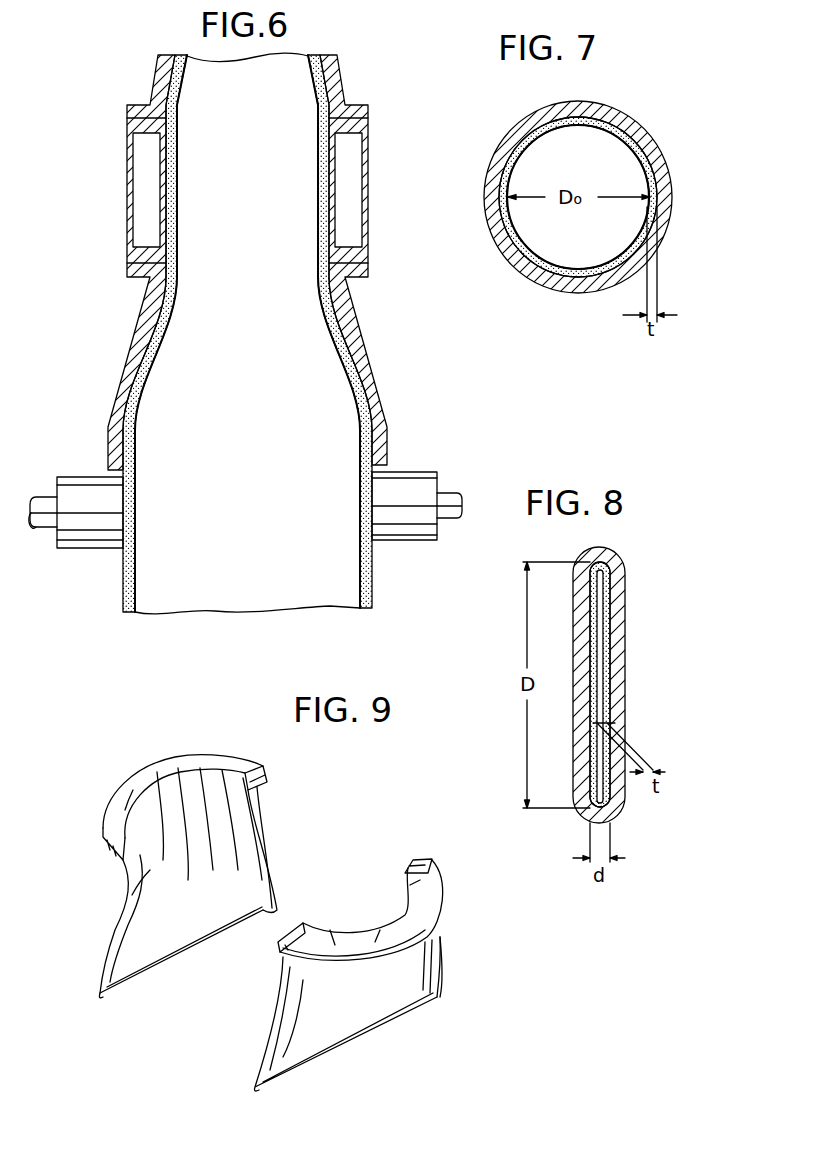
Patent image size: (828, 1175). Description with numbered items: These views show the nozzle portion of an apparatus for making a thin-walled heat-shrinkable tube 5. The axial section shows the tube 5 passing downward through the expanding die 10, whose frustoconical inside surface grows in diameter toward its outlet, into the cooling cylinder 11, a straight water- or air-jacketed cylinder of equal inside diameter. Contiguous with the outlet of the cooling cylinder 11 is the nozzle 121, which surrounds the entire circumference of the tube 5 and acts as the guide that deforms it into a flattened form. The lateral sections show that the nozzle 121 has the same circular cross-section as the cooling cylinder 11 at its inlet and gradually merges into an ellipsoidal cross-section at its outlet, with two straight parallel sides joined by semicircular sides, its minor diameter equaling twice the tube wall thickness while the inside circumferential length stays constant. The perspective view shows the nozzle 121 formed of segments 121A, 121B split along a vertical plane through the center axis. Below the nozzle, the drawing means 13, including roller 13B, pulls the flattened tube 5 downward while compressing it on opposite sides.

In FIG. 6, the tube 5 is at (335, 88).
In FIG. 7, the tube 5 is at (640, 127).
In FIG. 8, the tube 5 is at (605, 686).
In FIG. 6, the expanding die 10 is at (332, 58).
In FIG. 6, the cooling cylinder 11 is at (368, 195).
In FIG. 6, the nozzle 121 is at (358, 338).
In FIG. 7, the nozzle 121 is at (600, 104).
In FIG. 8, the nozzle 121 is at (627, 652).
In FIG. 9, the nozzle 121 is at (303, 923).
In FIG. 9, the segment 121A is at (263, 766).
In FIG. 9, the segment 121B is at (443, 912).
In FIG. 6, the drawing means 13 is at (452, 462).
In FIG. 6, the roller 13B is at (413, 478).